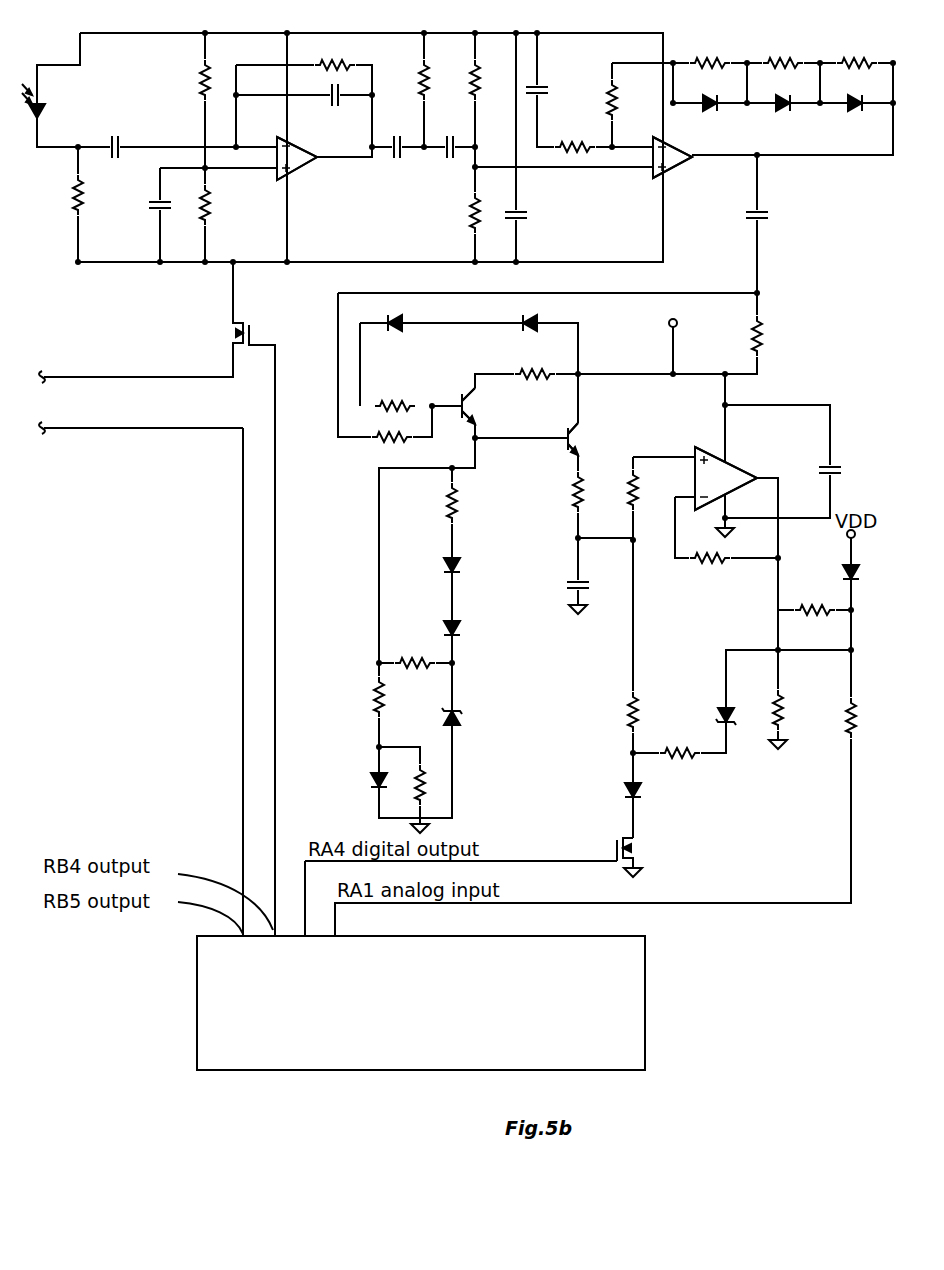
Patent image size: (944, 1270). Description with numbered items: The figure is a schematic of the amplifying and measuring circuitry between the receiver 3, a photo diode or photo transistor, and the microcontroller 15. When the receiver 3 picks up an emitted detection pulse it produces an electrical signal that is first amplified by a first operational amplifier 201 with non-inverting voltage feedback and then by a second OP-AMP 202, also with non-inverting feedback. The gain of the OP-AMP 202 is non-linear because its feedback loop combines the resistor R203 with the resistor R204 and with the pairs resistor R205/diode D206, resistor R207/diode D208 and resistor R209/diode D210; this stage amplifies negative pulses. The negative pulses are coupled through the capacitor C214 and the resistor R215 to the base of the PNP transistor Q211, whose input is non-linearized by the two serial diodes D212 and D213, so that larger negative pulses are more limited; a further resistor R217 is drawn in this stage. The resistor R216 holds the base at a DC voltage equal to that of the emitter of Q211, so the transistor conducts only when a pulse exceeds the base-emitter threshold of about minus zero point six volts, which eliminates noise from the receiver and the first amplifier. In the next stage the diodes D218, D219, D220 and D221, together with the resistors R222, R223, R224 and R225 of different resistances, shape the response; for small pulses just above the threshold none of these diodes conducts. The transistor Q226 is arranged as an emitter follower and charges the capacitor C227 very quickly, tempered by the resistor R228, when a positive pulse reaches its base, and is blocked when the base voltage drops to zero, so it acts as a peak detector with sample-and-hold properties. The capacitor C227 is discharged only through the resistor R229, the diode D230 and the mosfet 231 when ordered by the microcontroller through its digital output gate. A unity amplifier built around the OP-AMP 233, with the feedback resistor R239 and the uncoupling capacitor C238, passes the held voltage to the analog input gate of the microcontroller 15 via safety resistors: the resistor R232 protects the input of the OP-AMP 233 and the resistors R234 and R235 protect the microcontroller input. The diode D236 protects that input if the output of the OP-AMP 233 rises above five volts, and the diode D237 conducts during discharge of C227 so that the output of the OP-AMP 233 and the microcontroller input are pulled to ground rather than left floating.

The receiver 3 is at (45, 110).
The microcontroller 15 is at (436, 1013).
The first operational amplifier 201 is at (300, 165).
The second operational amplifier 202 is at (675, 163).
The resistor R203 is at (563, 142).
The resistor R204 is at (610, 92).
The resistor R205 is at (700, 57).
The diode D206 is at (707, 112).
The resistor R207 is at (778, 57).
The diode D208 is at (781, 112).
The resistor R209 is at (848, 57).
The diode D210 is at (853, 112).
The transistor Q211 is at (461, 404).
The diode D212 is at (390, 330).
The diode D213 is at (527, 330).
The capacitor C214 is at (766, 220).
The resistor R215 is at (383, 443).
The resistor R216 is at (763, 340).
The resistor R217 is at (523, 378).
The diode D218 is at (376, 778).
The diode D219 is at (463, 631).
The diode D220 is at (462, 563).
The diode D221 is at (463, 723).
The resistor R222 is at (428, 782).
The resistor R223 is at (377, 700).
The resistor R224 is at (420, 667).
The resistor R225 is at (458, 506).
The transistor Q226 is at (580, 436).
The capacitor C227 is at (572, 592).
The resistor R228 is at (576, 494).
The resistor R229 is at (637, 702).
The diode D230 is at (641, 788).
The mosfet 231 is at (636, 848).
The safety resistor R232 is at (640, 478).
The operational amplifier 233 is at (729, 473).
The safety resistor R234 is at (805, 612).
The safety resistor R235 is at (857, 713).
The diode D236 is at (859, 572).
The diode D237 is at (720, 712).
The uncoupling capacitor C238 is at (845, 450).
The feedback resistor R239 is at (705, 563).